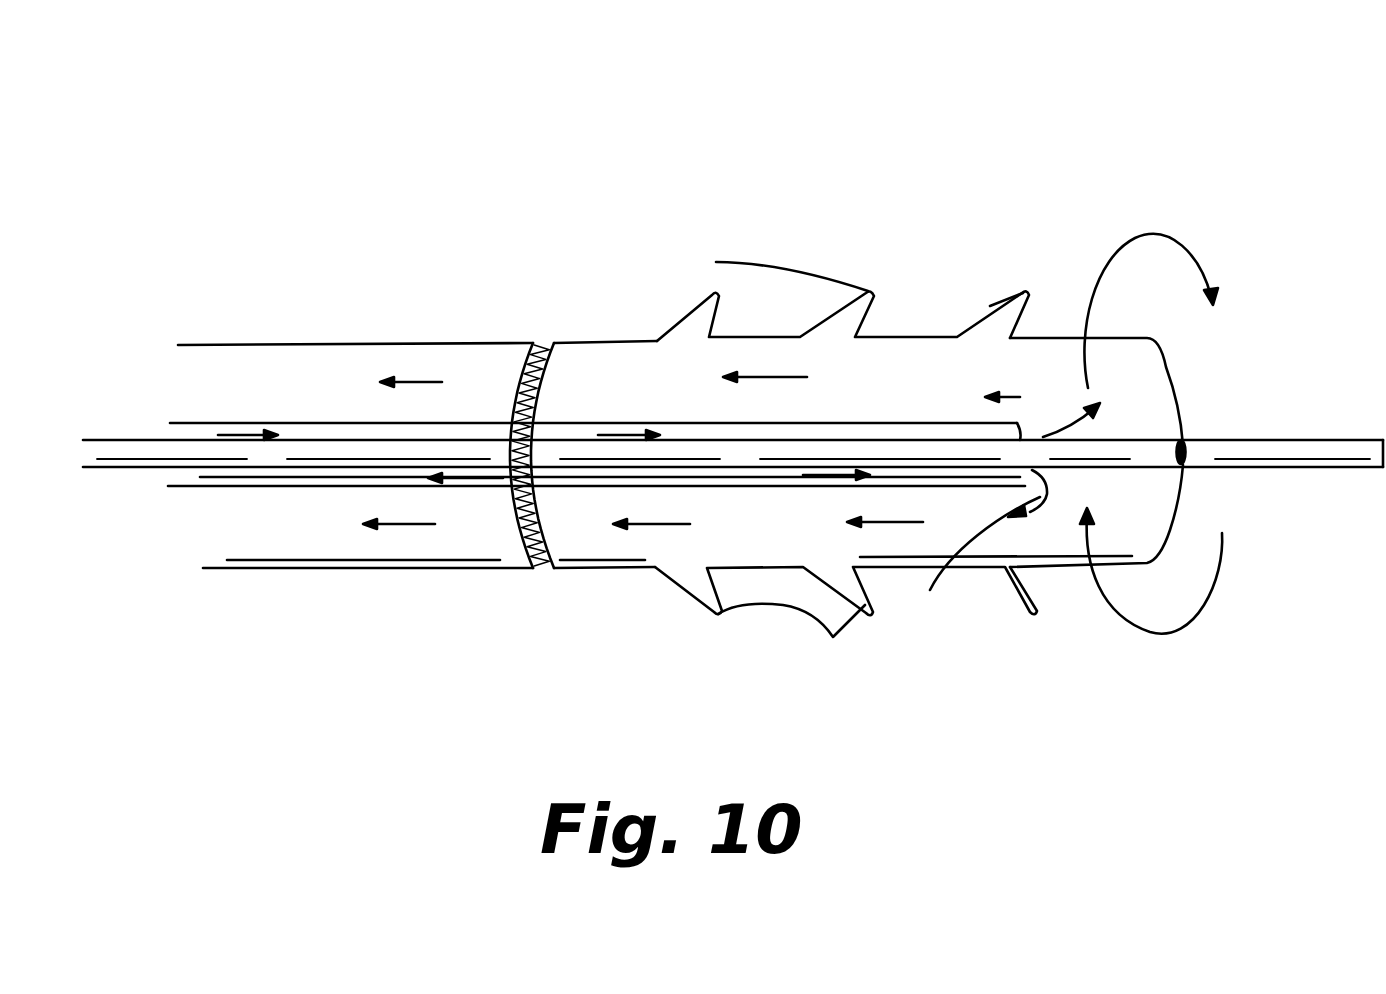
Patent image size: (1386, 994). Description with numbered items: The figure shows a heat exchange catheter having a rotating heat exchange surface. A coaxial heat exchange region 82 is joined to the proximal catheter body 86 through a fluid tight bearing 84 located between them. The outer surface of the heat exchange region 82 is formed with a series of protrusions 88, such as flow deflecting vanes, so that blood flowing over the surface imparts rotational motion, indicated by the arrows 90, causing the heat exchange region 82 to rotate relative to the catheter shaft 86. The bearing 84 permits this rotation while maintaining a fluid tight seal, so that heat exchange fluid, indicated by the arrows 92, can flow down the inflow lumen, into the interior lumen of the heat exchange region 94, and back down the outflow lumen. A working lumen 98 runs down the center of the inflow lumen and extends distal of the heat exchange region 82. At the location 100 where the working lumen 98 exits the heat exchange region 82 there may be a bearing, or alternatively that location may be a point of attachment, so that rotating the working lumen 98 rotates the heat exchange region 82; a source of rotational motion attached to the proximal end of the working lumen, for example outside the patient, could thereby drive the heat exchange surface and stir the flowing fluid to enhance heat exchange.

The heat exchange region 82 is at (1195, 148).
The fluid tight bearing 84 is at (530, 568).
The proximal catheter body 86 is at (418, 568).
The protrusions 88 is at (718, 262).
The arrows 90 is at (1167, 236).
The arrows 92 is at (237, 430).
The interior lumen of the heat exchange region 94 is at (883, 403).
The working lumen 98 is at (1342, 467).
The location where the working lumen exits the heat exchange region 100 is at (1183, 445).